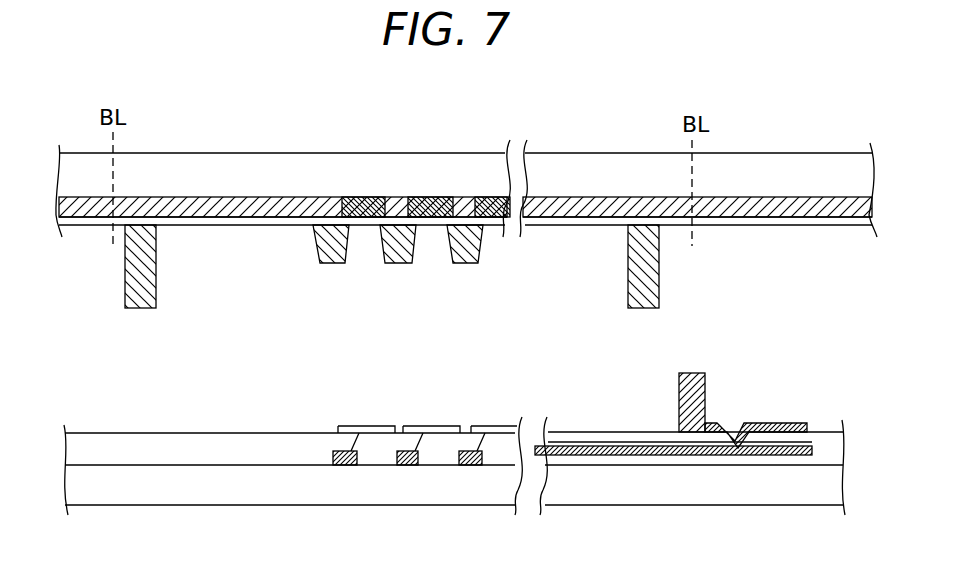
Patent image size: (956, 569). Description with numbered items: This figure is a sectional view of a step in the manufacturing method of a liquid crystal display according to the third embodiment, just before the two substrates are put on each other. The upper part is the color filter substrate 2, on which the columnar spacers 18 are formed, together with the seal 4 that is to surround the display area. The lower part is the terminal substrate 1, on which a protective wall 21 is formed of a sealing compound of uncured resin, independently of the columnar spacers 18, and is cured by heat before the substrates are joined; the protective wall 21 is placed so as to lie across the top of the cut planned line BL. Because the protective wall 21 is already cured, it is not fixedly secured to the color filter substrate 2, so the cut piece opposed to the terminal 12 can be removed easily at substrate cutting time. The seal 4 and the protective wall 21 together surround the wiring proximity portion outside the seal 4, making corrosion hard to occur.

The terminal substrate 1 is at (51, 430).
The color filter substrate 2 is at (51, 148).
The seal 4 is at (140, 298).
The terminal 12 is at (773, 423).
The columnar spacers 18 is at (332, 256).
The protective wall 21 is at (692, 373).